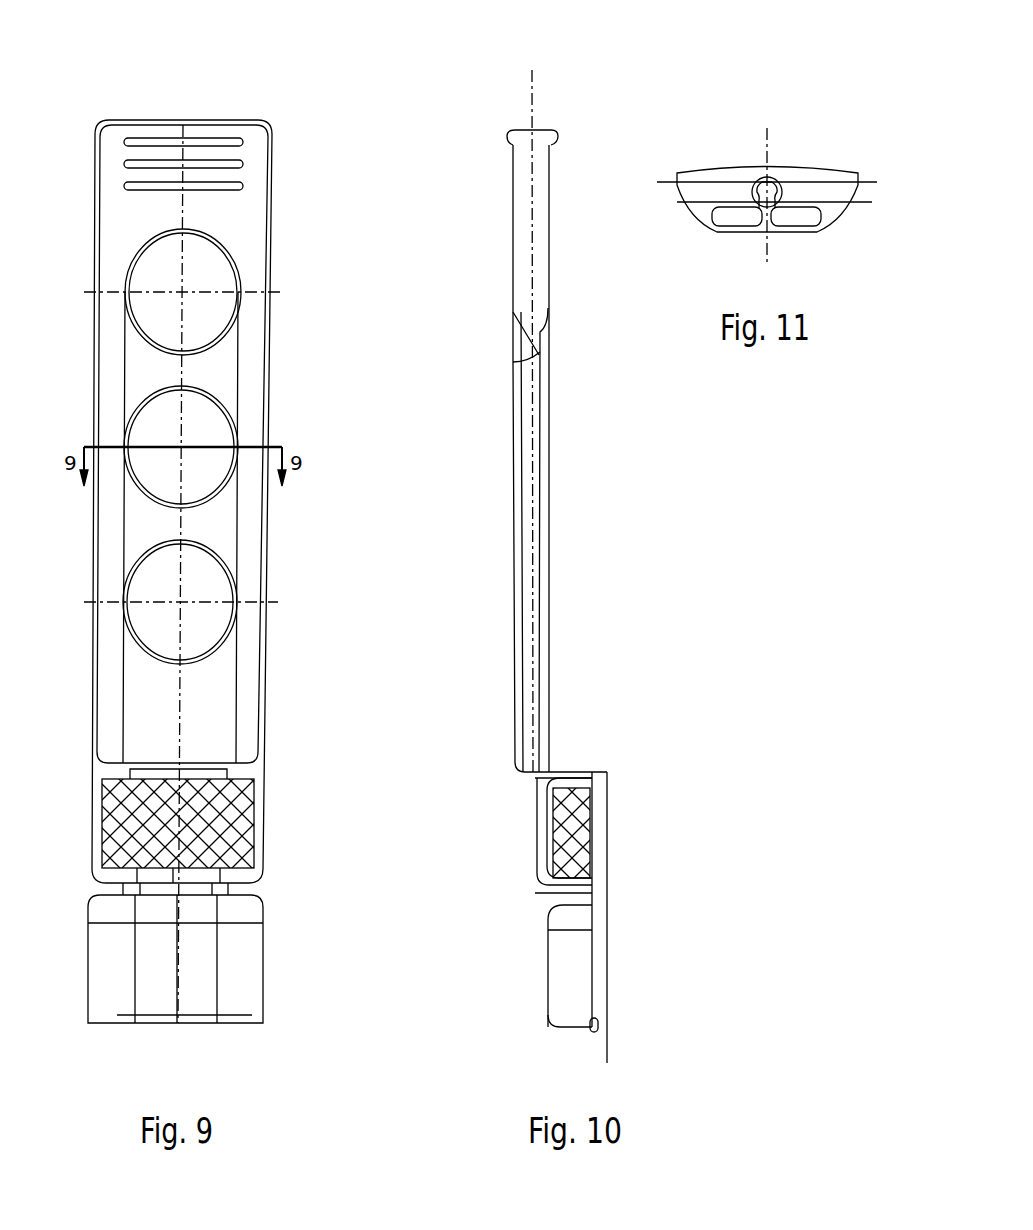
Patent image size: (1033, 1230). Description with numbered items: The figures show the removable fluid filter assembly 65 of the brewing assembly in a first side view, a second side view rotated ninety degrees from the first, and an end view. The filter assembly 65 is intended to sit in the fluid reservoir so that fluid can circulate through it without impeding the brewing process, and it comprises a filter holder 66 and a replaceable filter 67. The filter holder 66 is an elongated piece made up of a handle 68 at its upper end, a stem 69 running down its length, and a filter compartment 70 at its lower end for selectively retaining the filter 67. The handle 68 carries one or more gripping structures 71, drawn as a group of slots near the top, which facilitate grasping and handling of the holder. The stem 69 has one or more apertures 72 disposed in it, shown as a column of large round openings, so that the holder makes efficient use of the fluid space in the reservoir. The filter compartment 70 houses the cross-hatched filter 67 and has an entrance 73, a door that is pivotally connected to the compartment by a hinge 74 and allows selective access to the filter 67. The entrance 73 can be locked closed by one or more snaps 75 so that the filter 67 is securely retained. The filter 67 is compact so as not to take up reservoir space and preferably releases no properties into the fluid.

In FIG. 9, the filter assembly 65 is at (292, 72).
In FIG. 10, the filter assembly 65 is at (590, 69).
In FIG. 11, the filter assembly 65 is at (830, 150).
In FIG. 9, the filter holder 66 is at (80, 389).
In FIG. 9, the filter 67 is at (108, 806).
In FIG. 10, the filter 67 is at (573, 813).
In FIG. 9, the handle 68 is at (258, 143).
In FIG. 10, the handle 68 is at (510, 147).
In FIG. 9, the stem 69 is at (262, 412).
In FIG. 10, the stem 69 is at (513, 430).
In FIG. 9, the filter compartment 70 is at (265, 800).
In FIG. 10, the filter compartment 70 is at (538, 820).
In FIG. 9, the gripping structures 71 is at (221, 160).
In FIG. 9, the apertures 72 is at (208, 432).
In FIG. 9, the entrance 73 is at (240, 951).
In FIG. 10, the entrance 73 is at (563, 958).
In FIG. 9, the hinge 74 is at (238, 890).
In FIG. 10, the hinge 74 is at (565, 898).
In FIG. 9, the snaps 75 is at (235, 1023).
In FIG. 10, the snaps 75 is at (578, 1027).